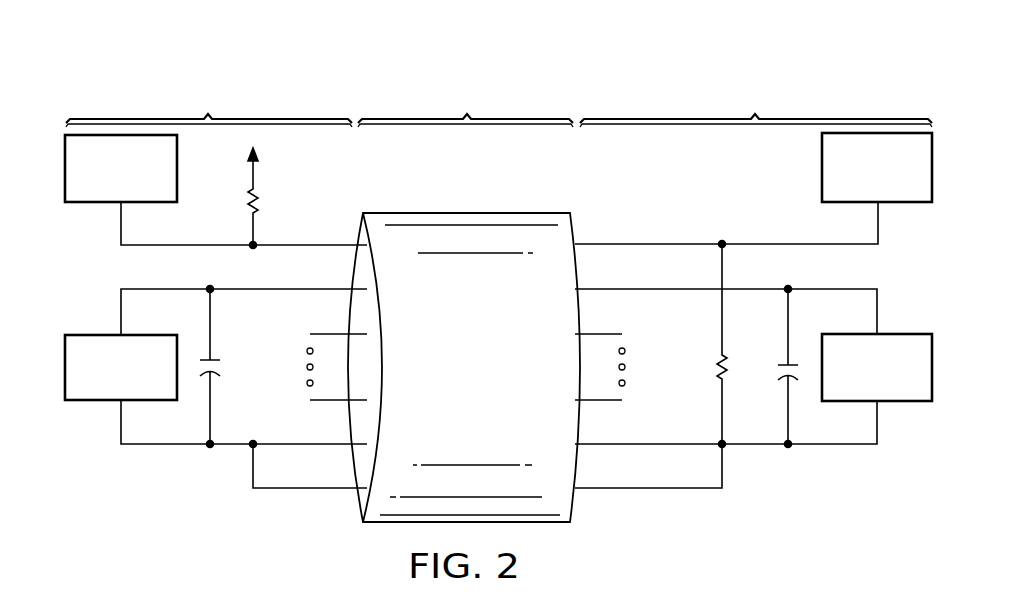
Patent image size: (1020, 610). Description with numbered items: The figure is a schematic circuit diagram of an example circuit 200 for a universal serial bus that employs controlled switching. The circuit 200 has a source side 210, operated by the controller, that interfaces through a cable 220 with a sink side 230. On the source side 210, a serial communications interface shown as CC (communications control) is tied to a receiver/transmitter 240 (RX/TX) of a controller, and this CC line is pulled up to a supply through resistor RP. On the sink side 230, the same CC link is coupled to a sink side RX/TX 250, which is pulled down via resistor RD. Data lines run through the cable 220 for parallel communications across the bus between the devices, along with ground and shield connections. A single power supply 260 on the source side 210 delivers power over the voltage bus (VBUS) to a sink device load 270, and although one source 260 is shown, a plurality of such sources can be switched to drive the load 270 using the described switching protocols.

The circuit 200 is at (856, 66).
The source side 210 is at (216, 272).
The cable 220 is at (464, 289).
The sink side 230 is at (753, 272).
The receiver/transmitter 240 is at (97, 203).
The sink side RX/TX 250 is at (900, 203).
The power supply 260 is at (97, 401).
The sink device load 270 is at (900, 402).